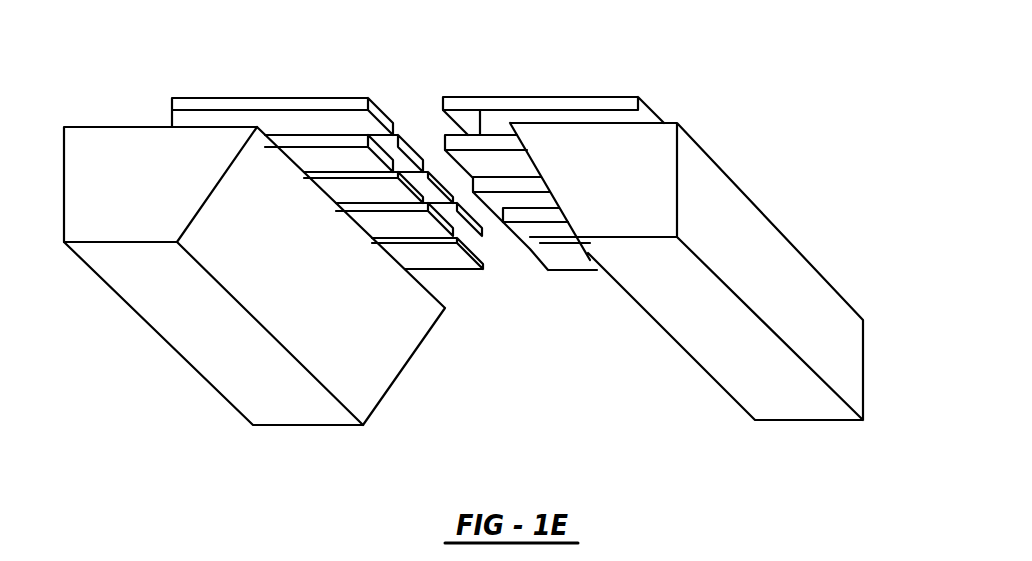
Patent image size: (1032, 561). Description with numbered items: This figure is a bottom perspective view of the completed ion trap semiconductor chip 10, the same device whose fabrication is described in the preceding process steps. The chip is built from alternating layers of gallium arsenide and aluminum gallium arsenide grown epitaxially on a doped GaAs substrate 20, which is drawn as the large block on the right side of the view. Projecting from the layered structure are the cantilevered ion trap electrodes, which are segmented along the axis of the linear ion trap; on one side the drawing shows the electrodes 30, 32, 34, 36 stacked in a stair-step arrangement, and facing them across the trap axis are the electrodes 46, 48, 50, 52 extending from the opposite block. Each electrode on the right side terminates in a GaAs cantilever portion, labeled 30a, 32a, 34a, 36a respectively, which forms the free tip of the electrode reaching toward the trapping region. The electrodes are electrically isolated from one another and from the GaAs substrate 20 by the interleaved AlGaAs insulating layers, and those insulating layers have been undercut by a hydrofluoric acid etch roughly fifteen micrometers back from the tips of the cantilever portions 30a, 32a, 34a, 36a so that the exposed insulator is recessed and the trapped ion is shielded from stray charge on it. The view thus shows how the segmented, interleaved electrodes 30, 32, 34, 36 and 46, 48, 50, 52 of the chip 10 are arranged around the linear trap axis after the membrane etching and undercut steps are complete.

The ion trap semiconductor chip 10 is at (463, 217).
The GaAs substrate 20 is at (787, 317).
The ion trap electrode 30 is at (573, 257).
The GaAs cantilever portion 30a is at (548, 270).
The ion trap electrode 32 is at (546, 223).
The GaAs cantilever portion 32a is at (497, 207).
The ion trap electrode 34 is at (523, 193).
The GaAs cantilever portion 34a is at (487, 188).
The ion trap electrode 36 is at (495, 163).
The GaAs cantilever portion 36a is at (483, 173).
The ion trap electrode 46 is at (440, 250).
The ion trap electrode 48 is at (412, 221).
The ion trap electrode 50 is at (341, 159).
The ion trap electrode 52 is at (384, 189).